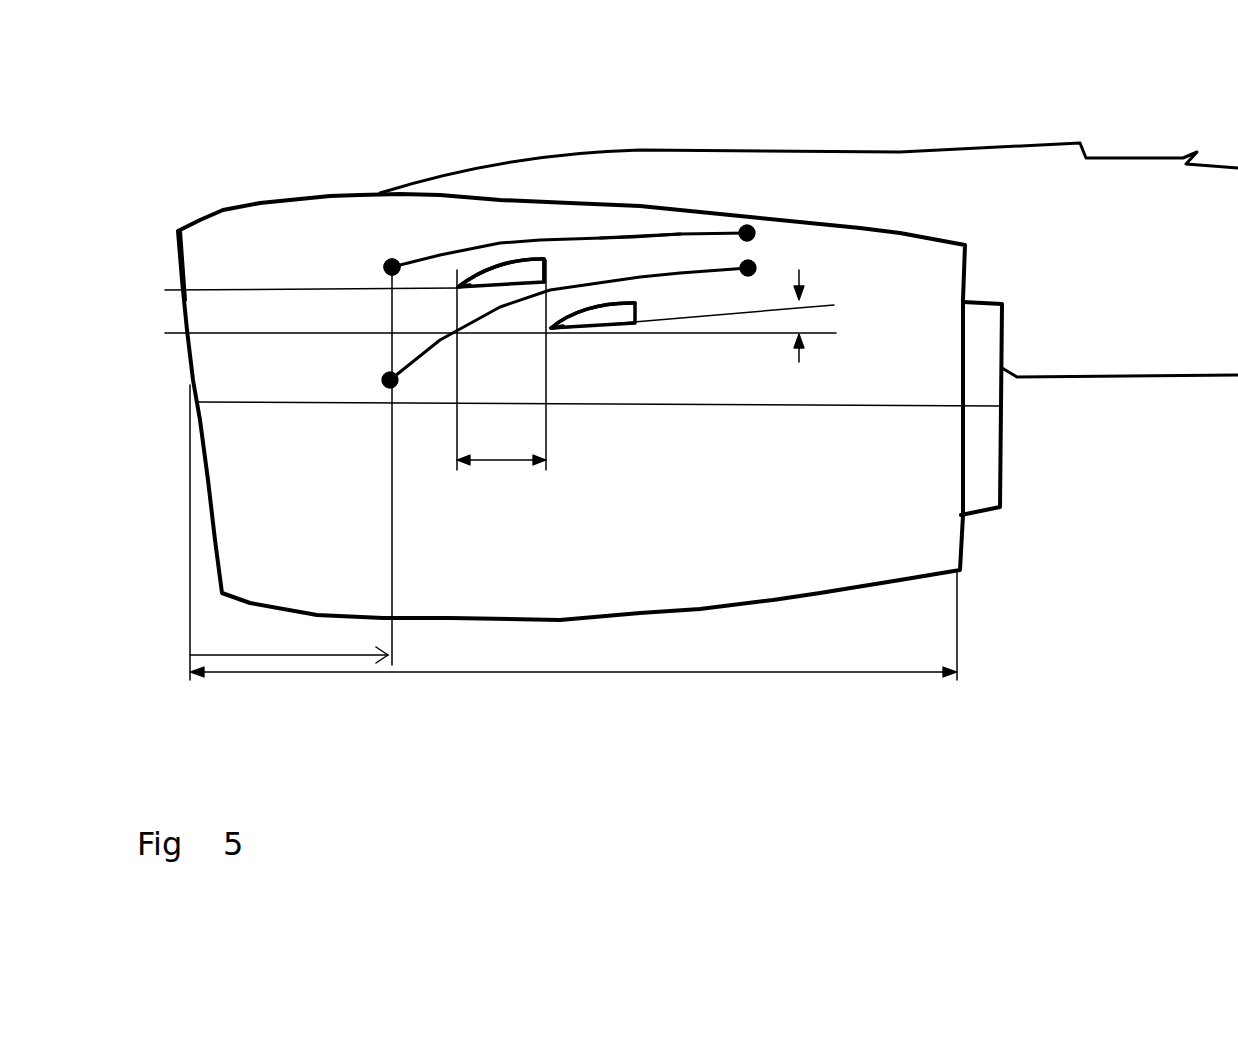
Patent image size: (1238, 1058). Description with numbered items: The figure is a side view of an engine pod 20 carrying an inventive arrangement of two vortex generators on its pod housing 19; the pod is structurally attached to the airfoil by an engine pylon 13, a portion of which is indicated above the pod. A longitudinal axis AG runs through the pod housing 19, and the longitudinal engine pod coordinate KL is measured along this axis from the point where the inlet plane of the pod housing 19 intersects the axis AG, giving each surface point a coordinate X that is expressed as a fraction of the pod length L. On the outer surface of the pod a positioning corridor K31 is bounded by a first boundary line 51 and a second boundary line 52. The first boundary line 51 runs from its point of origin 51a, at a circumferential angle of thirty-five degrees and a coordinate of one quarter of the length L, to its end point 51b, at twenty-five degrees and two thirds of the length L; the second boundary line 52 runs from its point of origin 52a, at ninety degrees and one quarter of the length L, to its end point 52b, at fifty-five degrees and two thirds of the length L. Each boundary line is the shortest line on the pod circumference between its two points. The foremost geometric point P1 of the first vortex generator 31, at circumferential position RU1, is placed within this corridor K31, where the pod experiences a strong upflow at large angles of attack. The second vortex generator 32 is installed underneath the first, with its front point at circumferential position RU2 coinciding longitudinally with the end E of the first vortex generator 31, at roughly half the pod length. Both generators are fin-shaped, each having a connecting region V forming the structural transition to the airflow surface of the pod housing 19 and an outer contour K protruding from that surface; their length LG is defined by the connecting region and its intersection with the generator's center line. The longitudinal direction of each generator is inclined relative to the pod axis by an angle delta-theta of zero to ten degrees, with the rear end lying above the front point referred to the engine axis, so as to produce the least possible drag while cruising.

The engine pod 20 is at (202, 172).
The pod housing 19 is at (237, 193).
The engine pylon 13 is at (809, 222).
The first boundary line 51 is at (569, 172).
The point of origin of the first boundary line 51a is at (369, 175).
The end point of the first boundary line 51b is at (778, 133).
The second boundary line 52 is at (572, 229).
The point of origin of the second boundary line 52a is at (350, 215).
The end point of the second boundary line 52b is at (808, 164).
The first vortex generator 31 is at (501, 181).
The second vortex generator 32 is at (593, 194).
The foremost geometric point P1 is at (422, 193).
The outer contour K is at (533, 209).
The positioning corridor K31 is at (637, 250).
The end of the first vortex generator E is at (536, 159).
The connecting region V is at (541, 394).
The circumferential position of the first vortex generator RU1 is at (260, 291).
The circumferential position of the second vortex generator RU2 is at (449, 337).
The longitudinal angle of the vortex generator delta-theta is at (748, 316).
The longitudinal axis AG is at (598, 455).
The length of the vortex generator LG is at (501, 380).
The longitudinal engine pod coordinate KL is at (289, 532).
The longitudinal engine pod coordinate of a point X is at (405, 466).
The length of the engine pod L is at (573, 653).